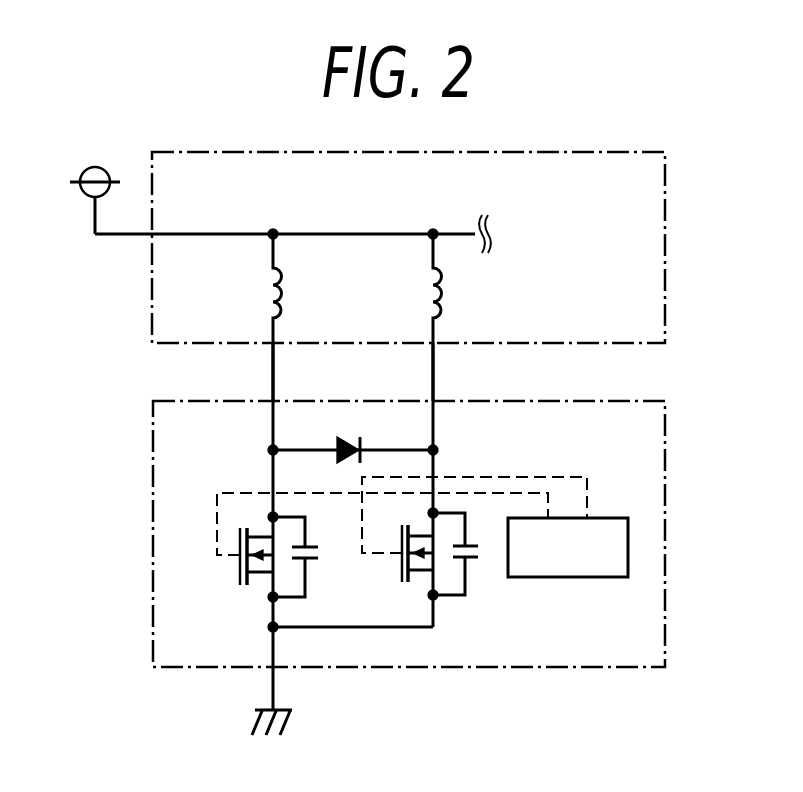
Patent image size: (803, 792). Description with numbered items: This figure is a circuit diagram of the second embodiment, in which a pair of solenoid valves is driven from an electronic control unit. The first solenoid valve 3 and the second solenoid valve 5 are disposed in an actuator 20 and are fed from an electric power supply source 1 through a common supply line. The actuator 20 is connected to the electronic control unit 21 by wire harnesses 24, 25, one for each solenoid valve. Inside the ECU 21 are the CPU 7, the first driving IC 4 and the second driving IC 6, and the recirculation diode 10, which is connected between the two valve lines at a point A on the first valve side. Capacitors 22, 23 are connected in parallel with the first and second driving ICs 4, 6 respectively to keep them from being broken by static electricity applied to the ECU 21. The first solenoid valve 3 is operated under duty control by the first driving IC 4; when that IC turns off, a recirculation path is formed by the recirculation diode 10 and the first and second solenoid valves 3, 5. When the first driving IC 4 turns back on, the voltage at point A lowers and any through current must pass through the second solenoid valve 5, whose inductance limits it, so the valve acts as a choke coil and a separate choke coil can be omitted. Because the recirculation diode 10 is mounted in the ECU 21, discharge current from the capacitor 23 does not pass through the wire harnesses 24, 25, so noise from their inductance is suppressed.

The electric power supply source 1 is at (83, 172).
The first solenoid valve 3 is at (271, 284).
The second solenoid valve 5 is at (436, 288).
The actuator 20 is at (665, 228).
The electronic control unit 21 is at (665, 470).
The wire harness 24 is at (271, 368).
The wire harness 25 is at (435, 368).
The point A is at (271, 449).
The recirculation diode 10 is at (348, 436).
The first driving IC 4 is at (238, 578).
The second driving IC 6 is at (400, 568).
The capacitor 22 is at (310, 560).
The capacitor 23 is at (470, 560).
The CPU 7 is at (590, 577).